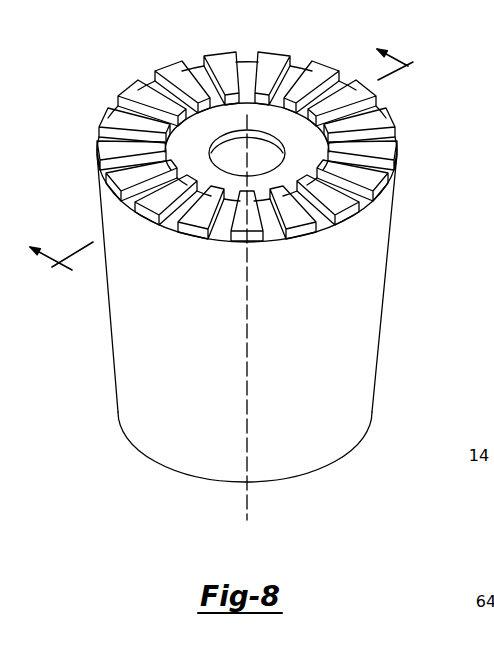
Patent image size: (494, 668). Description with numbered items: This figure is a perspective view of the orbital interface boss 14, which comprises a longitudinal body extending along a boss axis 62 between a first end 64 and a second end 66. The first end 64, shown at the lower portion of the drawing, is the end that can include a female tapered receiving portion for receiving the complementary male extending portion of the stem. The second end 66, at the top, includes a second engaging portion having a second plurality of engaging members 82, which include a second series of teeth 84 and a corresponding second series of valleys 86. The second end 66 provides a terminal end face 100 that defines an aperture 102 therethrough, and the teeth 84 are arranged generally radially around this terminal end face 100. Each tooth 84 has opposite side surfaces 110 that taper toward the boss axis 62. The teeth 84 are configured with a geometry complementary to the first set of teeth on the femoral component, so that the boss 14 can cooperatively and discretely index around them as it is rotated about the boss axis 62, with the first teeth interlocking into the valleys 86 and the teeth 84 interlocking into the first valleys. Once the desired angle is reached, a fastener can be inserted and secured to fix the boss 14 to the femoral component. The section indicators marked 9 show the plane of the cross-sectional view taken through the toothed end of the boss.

The boss 14 is at (373, 250).
The boss axis 62 is at (248, 452).
The first end 64 is at (163, 468).
The second end 66 is at (192, 143).
The second plurality of engaging members 82 is at (390, 177).
The second series of teeth 84 is at (388, 118).
The second series of valleys 86 is at (293, 222).
The terminal end face 100 is at (218, 118).
The aperture 102 is at (267, 148).
The opposite side surfaces 110 is at (205, 235).
The section line 9- 9 is at (230, 171).